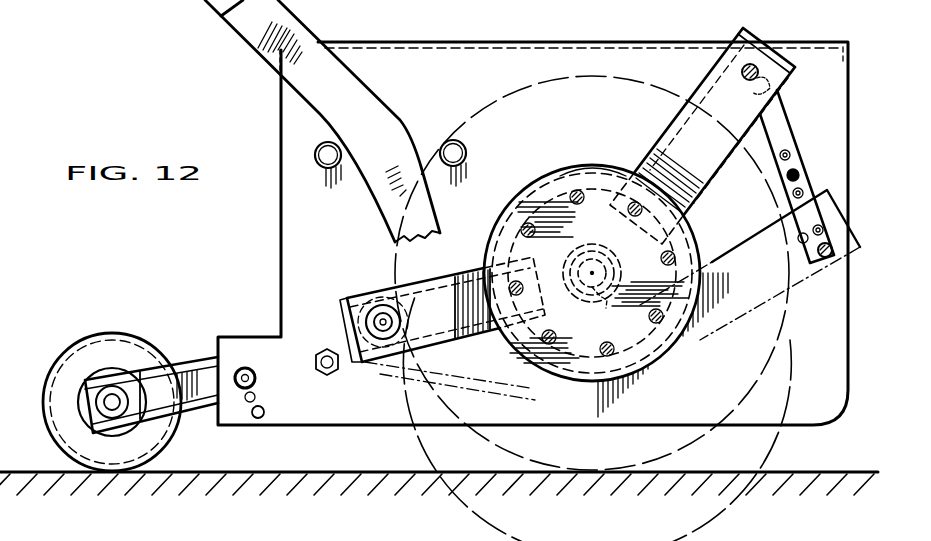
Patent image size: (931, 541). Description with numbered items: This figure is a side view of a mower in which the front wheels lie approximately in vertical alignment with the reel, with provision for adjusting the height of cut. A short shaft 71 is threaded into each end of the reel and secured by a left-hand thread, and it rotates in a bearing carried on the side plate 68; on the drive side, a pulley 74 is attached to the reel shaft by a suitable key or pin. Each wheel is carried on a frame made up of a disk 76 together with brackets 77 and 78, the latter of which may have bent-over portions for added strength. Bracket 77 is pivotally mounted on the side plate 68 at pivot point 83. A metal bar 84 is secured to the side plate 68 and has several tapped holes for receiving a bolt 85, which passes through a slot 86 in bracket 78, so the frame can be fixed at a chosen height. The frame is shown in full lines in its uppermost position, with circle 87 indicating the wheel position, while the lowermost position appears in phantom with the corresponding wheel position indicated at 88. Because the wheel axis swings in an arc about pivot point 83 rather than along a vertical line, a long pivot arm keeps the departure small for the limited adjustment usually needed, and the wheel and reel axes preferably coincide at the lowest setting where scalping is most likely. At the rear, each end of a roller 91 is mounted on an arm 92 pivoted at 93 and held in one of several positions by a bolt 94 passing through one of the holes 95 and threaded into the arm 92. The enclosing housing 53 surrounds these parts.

The housing 53 is at (473, 47).
The side plate 68 is at (290, 232).
The short shaft 71 is at (592, 287).
The pulley 74 is at (526, 201).
The disk 76 is at (596, 178).
The bracket 77 is at (442, 287).
The bracket 78 is at (693, 127).
The pivot point 83 is at (385, 318).
The metal bar 84 is at (780, 134).
The bolt 85 is at (772, 78).
The slot 86 is at (740, 82).
The circle indicating wheel position 87 is at (543, 80).
The phantom wheel position 88 is at (713, 519).
The roller 91 is at (95, 357).
The arm 92 is at (190, 373).
The pivot 93 is at (325, 378).
The bolt 94 is at (254, 372).
The holes 95 is at (250, 403).